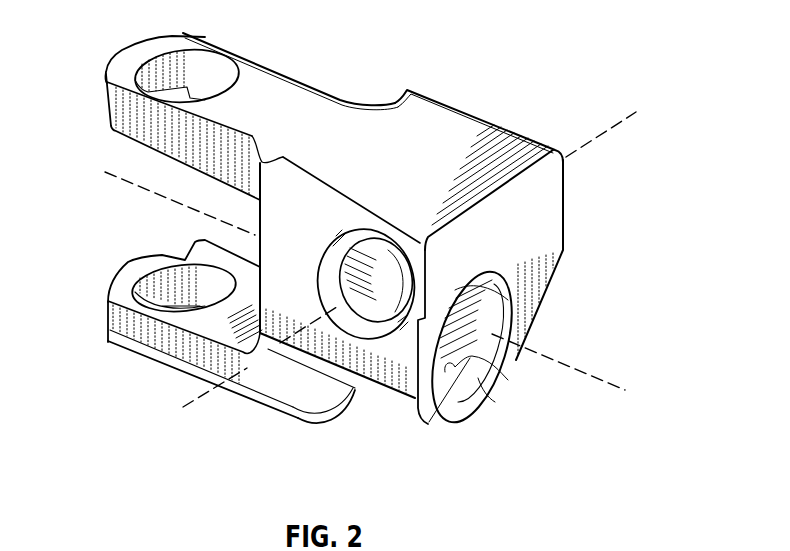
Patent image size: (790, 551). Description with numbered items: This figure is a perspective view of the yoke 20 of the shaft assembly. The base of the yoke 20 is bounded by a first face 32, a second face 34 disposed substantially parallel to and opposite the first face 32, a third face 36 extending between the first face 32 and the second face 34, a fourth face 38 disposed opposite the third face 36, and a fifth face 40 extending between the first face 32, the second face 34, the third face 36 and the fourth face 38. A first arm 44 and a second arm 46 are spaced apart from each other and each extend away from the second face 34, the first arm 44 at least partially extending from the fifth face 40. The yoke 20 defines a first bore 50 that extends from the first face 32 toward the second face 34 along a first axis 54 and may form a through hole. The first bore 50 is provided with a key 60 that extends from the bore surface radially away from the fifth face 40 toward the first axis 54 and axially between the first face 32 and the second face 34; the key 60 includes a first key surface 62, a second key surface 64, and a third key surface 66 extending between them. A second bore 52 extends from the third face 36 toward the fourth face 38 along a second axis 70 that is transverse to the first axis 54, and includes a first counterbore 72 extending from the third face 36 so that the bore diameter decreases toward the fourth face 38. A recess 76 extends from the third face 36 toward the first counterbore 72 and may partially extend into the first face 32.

The yoke 20 is at (359, 246).
The first face 32 is at (532, 248).
The second face 34 is at (266, 214).
The third face 36 is at (377, 372).
The fourth face 38 is at (565, 223).
The fifth face 40 is at (452, 427).
The first arm 44 is at (118, 352).
The second arm 46 is at (208, 38).
The first bore 50 is at (488, 268).
The second bore 52 is at (353, 224).
The first axis 54 is at (583, 359).
The key 60 is at (513, 311).
The first key surface 62 is at (472, 356).
The second key surface 64 is at (429, 422).
The third key surface 66 is at (478, 378).
The second axis 70 is at (598, 136).
The first counterbore 72 is at (367, 233).
The recess 76 is at (423, 277).